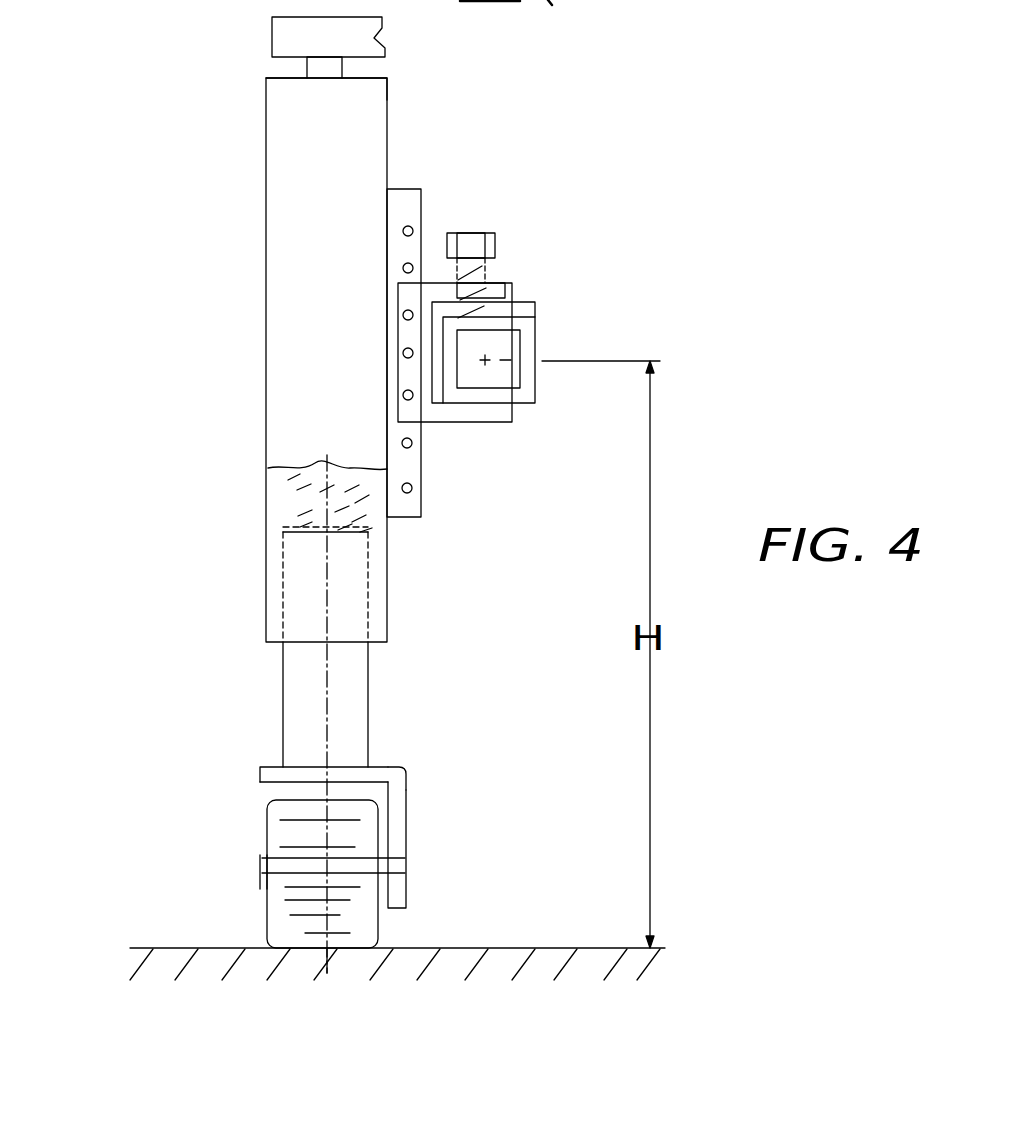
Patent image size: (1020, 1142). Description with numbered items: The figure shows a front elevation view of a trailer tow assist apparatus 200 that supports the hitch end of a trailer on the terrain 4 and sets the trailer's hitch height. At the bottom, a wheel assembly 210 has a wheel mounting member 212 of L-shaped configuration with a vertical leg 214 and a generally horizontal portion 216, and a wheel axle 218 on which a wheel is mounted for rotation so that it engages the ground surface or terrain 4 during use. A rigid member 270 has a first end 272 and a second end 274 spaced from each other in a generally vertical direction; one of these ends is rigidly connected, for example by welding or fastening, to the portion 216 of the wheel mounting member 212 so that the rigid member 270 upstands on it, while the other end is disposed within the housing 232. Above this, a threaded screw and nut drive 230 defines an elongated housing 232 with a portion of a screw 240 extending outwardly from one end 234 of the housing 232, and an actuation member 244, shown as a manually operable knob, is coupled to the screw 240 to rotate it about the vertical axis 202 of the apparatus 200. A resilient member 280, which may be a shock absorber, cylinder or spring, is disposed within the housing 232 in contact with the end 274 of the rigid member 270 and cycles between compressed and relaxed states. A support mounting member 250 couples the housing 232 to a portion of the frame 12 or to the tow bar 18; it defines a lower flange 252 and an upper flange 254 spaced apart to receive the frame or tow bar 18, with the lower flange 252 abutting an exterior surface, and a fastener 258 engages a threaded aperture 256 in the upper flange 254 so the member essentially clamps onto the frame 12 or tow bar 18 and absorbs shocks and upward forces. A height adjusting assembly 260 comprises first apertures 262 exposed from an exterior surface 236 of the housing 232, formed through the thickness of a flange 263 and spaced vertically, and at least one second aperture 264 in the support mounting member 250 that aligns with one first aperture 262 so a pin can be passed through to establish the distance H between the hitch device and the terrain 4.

The terrain 4 is at (140, 946).
The frame 12 is at (535, 347).
The tow bar 18 is at (562, 345).
The trailer tow assist apparatus 200 is at (797, 262).
The vertical axis 202 is at (325, 962).
The wheel assembly 210 is at (462, 783).
The wheel mounting member 212 is at (412, 853).
The vertical leg 214 is at (407, 832).
The horizontal portion 216 is at (392, 765).
The wheel axle 218 is at (258, 882).
The threaded screw and nut drive 230 is at (258, 196).
The housing 232 is at (265, 270).
The one end 234 is at (283, 80).
The exterior surface 236 is at (387, 103).
The screw 240 is at (318, 72).
The actuation member 244 is at (300, 37).
The support mounting member 250 is at (617, 243).
The lower flange 252 is at (488, 415).
The upper flange 254 is at (505, 300).
The threaded aperture 256 is at (475, 290).
The fastener 258 is at (475, 235).
The height adjusting assembly 260 is at (472, 156).
The first apertures 262 is at (411, 265).
The flange 263 is at (407, 189).
The second aperture 264 is at (402, 353).
The rigid member 270 is at (282, 670).
The first end 272 is at (300, 765).
The second end 274 is at (300, 537).
The resilient member 280 is at (290, 487).